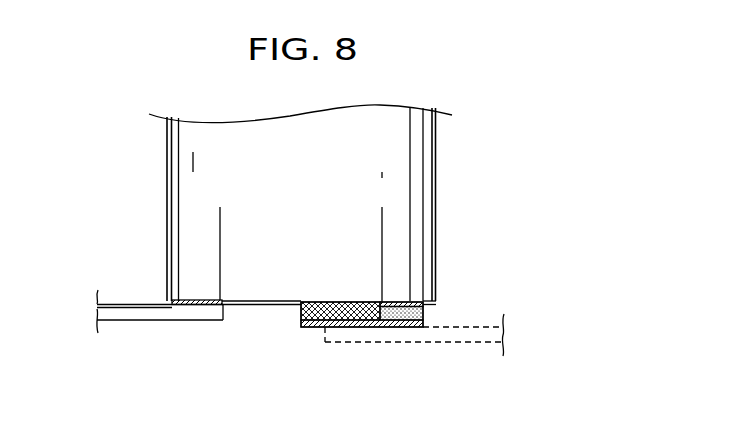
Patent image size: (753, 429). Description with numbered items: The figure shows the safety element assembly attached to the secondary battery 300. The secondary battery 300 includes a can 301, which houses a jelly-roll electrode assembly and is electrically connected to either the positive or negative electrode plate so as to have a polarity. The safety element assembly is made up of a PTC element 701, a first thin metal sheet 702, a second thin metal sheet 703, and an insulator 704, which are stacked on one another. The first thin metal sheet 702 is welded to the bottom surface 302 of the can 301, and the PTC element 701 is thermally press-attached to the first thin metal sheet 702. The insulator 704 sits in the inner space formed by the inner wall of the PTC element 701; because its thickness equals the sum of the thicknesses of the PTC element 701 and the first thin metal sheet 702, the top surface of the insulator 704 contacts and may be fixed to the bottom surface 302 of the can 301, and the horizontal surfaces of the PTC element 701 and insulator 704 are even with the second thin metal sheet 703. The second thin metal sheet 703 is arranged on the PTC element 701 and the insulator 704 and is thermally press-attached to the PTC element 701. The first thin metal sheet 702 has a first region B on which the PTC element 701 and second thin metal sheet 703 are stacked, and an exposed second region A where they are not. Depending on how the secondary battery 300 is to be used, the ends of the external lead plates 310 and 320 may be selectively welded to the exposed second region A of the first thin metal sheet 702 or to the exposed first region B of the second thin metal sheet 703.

The secondary battery 300 is at (392, 163).
The can 301 is at (167, 165).
The bottom surface 302 is at (172, 302).
The external lead plate 310 is at (127, 320).
The external lead plate 320 is at (422, 342).
The PTC element 701 is at (423, 311).
The first thin metal sheet 702 is at (423, 303).
The second thin metal sheet 703 is at (312, 327).
The insulator 704 is at (303, 313).
The second region A is at (208, 307).
The first region B is at (350, 327).